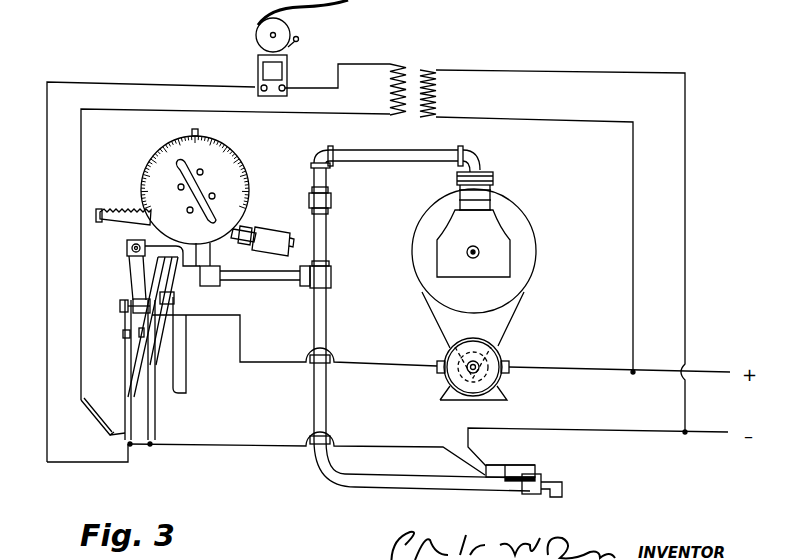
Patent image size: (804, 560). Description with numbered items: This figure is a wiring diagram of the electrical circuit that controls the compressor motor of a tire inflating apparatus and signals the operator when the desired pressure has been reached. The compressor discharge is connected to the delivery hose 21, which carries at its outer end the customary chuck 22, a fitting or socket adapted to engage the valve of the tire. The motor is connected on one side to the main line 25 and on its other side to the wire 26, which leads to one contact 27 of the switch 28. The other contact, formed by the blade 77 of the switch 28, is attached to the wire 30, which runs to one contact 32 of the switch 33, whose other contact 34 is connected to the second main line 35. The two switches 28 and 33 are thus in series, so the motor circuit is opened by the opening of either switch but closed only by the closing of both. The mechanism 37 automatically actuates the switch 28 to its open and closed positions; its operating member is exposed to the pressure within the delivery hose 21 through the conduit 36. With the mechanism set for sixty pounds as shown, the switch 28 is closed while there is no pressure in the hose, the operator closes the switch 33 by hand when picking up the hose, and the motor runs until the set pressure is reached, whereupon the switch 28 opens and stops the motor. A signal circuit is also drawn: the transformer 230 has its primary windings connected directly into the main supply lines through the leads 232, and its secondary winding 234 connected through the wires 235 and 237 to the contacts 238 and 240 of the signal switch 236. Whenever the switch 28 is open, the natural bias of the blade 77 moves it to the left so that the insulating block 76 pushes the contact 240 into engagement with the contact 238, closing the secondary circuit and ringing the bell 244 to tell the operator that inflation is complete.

The delivery hose 21 is at (390, 488).
The chuck 22 is at (566, 488).
The main line 25 is at (712, 372).
The wire 26 is at (368, 362).
The contact 27 is at (170, 283).
The switch 28 is at (212, 346).
The wire 30 is at (224, 446).
The contact 32 is at (529, 492).
The switch 33 is at (575, 472).
The contact 34 is at (530, 466).
The second main line 35 is at (610, 432).
The conduit 36 is at (271, 281).
The mechanism 37 is at (284, 181).
The insulating block 76 is at (150, 360).
The blade 77 is at (148, 288).
The transformer 230 is at (428, 70).
The leads 232 is at (633, 206).
The secondary winding 234 is at (397, 66).
The wire 235 is at (125, 110).
The signal switch 236 is at (118, 379).
The wire 237 is at (132, 82).
The contact 238 is at (123, 334).
The contact 240 is at (142, 330).
The bell 244 is at (283, 32).